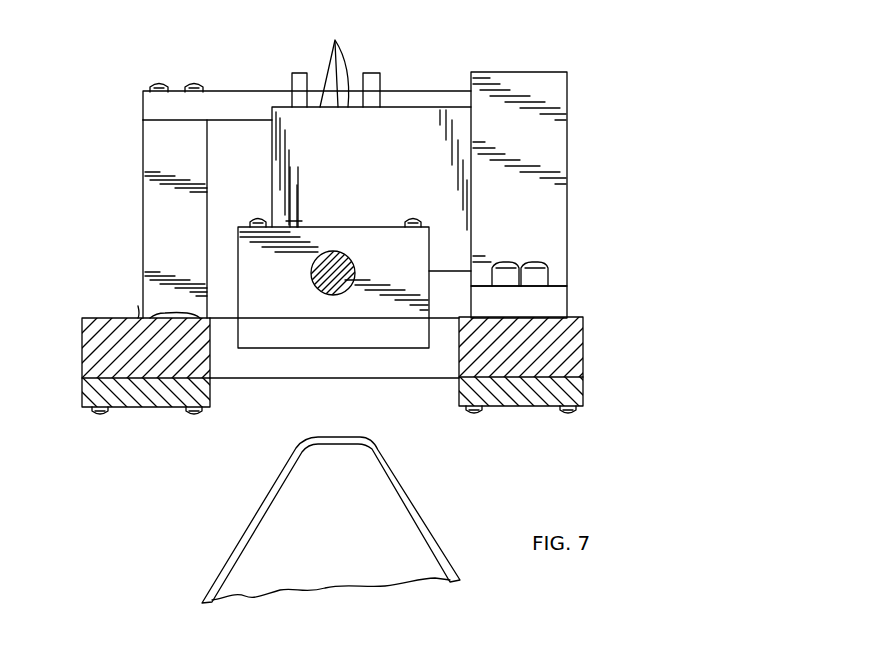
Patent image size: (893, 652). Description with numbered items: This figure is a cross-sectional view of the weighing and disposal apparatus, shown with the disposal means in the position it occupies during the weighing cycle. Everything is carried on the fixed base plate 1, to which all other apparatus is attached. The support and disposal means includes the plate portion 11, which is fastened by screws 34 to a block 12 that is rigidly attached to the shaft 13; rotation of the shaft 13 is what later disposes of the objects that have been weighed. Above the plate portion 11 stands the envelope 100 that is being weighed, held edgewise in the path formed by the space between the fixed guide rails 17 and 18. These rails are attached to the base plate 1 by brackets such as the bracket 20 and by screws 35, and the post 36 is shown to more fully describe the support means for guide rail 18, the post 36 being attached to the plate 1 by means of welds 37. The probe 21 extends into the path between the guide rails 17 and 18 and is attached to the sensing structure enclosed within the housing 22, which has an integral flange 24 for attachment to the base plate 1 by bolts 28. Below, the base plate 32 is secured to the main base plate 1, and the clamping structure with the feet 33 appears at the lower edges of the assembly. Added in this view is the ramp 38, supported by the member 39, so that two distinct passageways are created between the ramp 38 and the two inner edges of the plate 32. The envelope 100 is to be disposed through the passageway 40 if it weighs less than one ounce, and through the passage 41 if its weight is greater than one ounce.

The fixed base plate 1 is at (82, 341).
The plate portion 11 is at (297, 342).
The block 12 is at (292, 226).
The shaft 13 is at (327, 258).
The fixed guide rail 17 is at (376, 74).
The fixed guide rail 18 is at (292, 76).
The bracket 20 is at (143, 100).
The probe 21 is at (401, 158).
The housing 22 is at (556, 80).
The flange 24 is at (557, 300).
The bolt 28 is at (548, 270).
The base plate 32 is at (82, 394).
The fasteners 33 is at (100, 413).
The screw 34 is at (255, 219).
The screw 35 is at (184, 58).
The post 36 is at (143, 150).
The weld 37 is at (146, 314).
The ramp 38 is at (243, 543).
The member 39 is at (317, 578).
The passageway 40 is at (407, 432).
The passage 41 is at (267, 429).
The envelope 100 is at (336, 40).